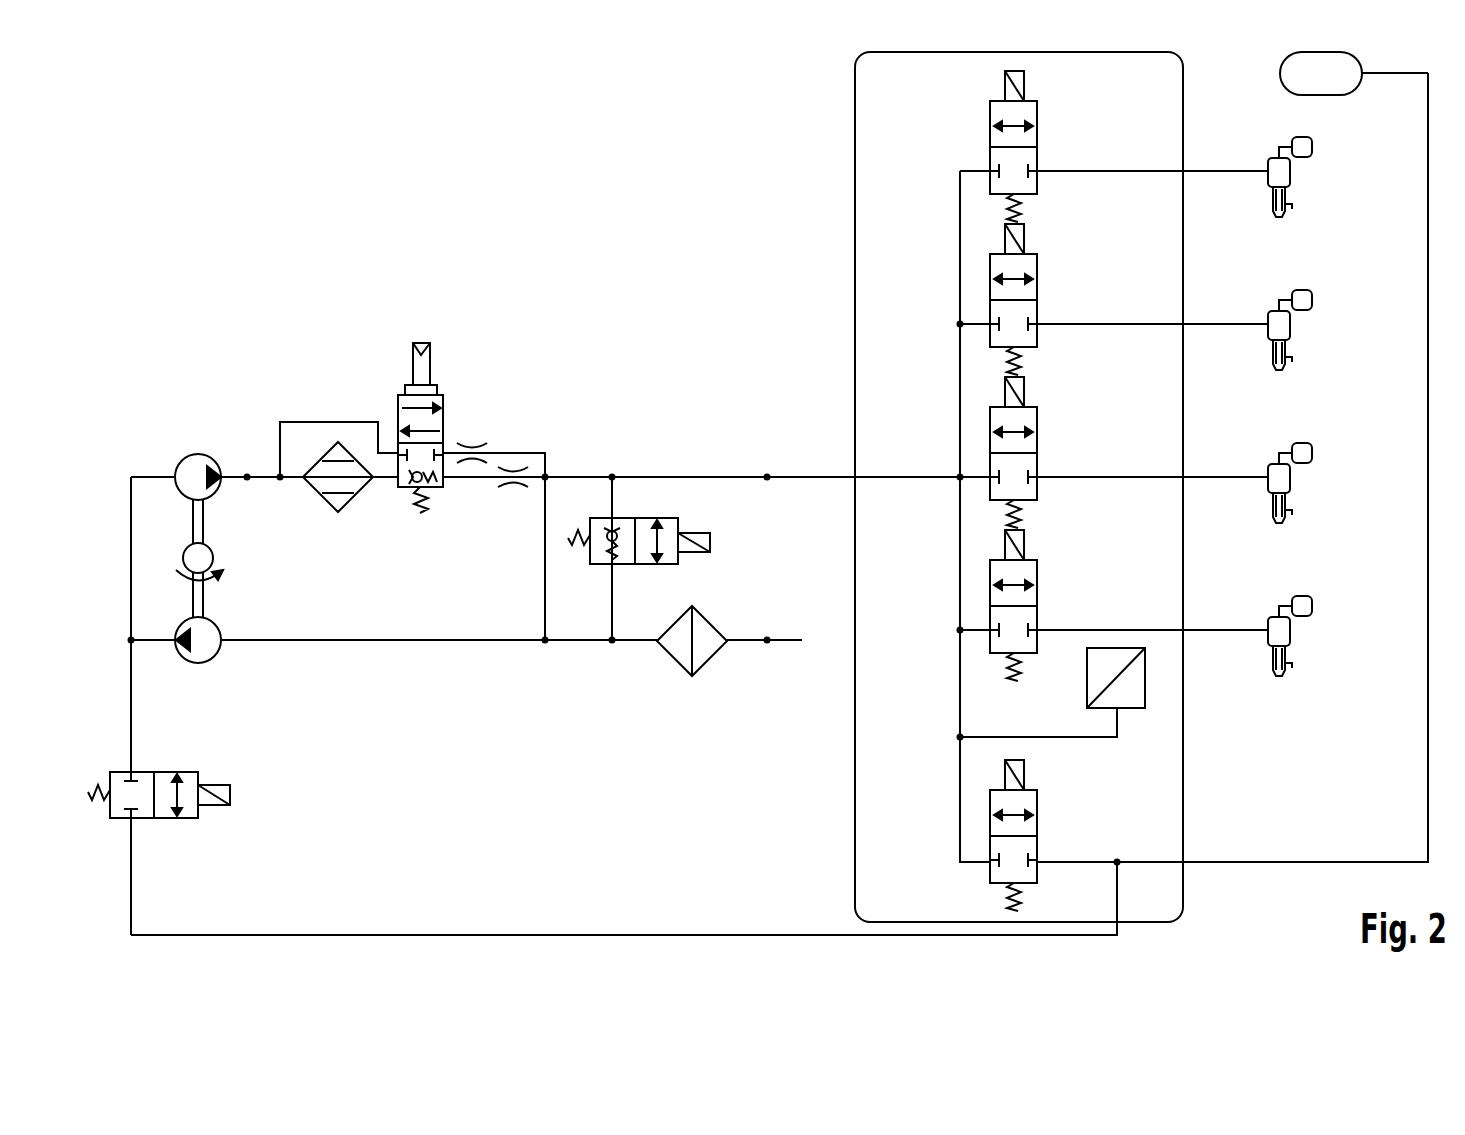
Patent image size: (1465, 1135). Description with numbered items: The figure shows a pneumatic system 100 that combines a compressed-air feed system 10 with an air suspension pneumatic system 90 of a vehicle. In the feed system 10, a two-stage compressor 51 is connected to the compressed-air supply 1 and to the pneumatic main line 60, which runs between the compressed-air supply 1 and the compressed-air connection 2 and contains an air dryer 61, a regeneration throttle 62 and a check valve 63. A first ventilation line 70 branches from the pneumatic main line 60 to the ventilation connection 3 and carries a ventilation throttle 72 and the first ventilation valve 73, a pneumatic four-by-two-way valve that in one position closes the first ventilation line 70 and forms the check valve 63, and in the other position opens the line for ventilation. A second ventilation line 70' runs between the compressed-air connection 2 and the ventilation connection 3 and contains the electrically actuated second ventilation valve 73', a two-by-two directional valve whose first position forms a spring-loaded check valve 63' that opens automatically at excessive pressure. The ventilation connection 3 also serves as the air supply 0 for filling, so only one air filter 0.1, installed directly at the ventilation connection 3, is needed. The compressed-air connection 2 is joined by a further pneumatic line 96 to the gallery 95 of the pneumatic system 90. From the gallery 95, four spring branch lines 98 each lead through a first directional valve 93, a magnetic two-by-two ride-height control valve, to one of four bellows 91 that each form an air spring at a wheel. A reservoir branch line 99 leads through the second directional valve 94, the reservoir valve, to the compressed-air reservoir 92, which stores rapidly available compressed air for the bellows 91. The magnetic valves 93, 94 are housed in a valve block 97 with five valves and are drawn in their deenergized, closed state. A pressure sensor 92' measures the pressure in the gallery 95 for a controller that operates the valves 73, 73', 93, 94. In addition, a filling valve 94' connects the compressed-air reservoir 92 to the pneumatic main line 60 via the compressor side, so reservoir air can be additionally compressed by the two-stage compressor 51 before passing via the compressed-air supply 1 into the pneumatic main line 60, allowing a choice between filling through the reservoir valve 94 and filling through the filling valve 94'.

The pneumatic system 100 is at (345, 172).
The compressed-air feed system 10 is at (157, 494).
The two-stage compressor 51 is at (185, 548).
The compressed-air supply 1 is at (247, 476).
The pneumatic main line 60 is at (442, 491).
The air dryer 61 is at (312, 500).
The regeneration throttle 62 is at (513, 490).
The check valve 63 is at (394, 510).
The first ventilation line 70 is at (508, 558).
The ventilation throttle 72 is at (471, 443).
The first ventilation valve 73 is at (381, 446).
The compressed-air connection 2 is at (767, 477).
The ventilation connection 3 is at (545, 645).
The air supply 0 is at (767, 640).
The air filter 0.1 is at (712, 660).
The second ventilation valve 73' is at (633, 515).
The check valve 63' is at (588, 568).
The second ventilation line 70' is at (650, 558).
The filling valve 94' is at (159, 836).
The pneumatic system 90 is at (758, 120).
The valve block 97 is at (855, 295).
The further pneumatic line 96 is at (905, 475).
The gallery 95 is at (960, 215).
The first directional valve 93 is at (1038, 112).
The second directional valve 94 is at (1055, 835).
The first branch line 98 is at (1228, 171).
The bellows 91 is at (1292, 172).
The compressed-air reservoir 92 is at (1354, 97).
The pressure sensor 92' is at (1061, 719).
The second branch line 99 is at (1315, 860).